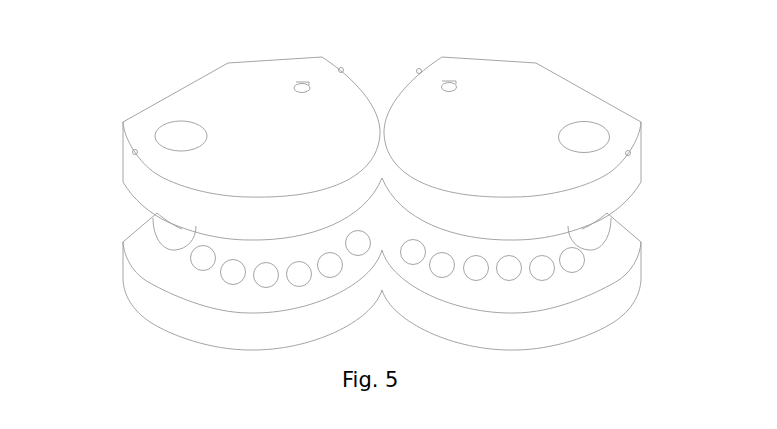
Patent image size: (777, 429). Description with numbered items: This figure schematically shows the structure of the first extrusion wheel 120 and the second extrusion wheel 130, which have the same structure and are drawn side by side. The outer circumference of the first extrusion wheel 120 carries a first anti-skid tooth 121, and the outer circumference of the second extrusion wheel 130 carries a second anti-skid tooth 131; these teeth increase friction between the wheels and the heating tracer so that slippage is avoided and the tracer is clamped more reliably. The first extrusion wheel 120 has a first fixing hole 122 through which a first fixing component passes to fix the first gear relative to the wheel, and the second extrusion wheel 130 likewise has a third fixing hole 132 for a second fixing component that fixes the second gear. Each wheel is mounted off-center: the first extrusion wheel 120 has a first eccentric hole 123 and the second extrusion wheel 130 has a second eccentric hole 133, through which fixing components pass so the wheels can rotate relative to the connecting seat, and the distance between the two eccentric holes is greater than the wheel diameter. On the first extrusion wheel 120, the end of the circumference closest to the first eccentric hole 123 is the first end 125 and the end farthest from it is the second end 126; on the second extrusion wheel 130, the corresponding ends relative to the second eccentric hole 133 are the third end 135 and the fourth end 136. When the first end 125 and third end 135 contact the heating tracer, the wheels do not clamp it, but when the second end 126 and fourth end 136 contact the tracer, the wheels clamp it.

The first extrusion wheel 120 is at (493, 100).
The first anti-skid tooth 121 is at (586, 259).
The first fixing hole 122 is at (463, 72).
The first eccentric hole 123 is at (600, 130).
The first end 125 is at (630, 156).
The second end 126 is at (419, 68).
The second extrusion wheel 130 is at (247, 93).
The second anti-skid tooth 131 is at (195, 263).
The third fixing hole 132 is at (287, 72).
The second eccentric hole 133 is at (167, 135).
The third end 135 is at (134, 153).
The fourth end 136 is at (341, 67).